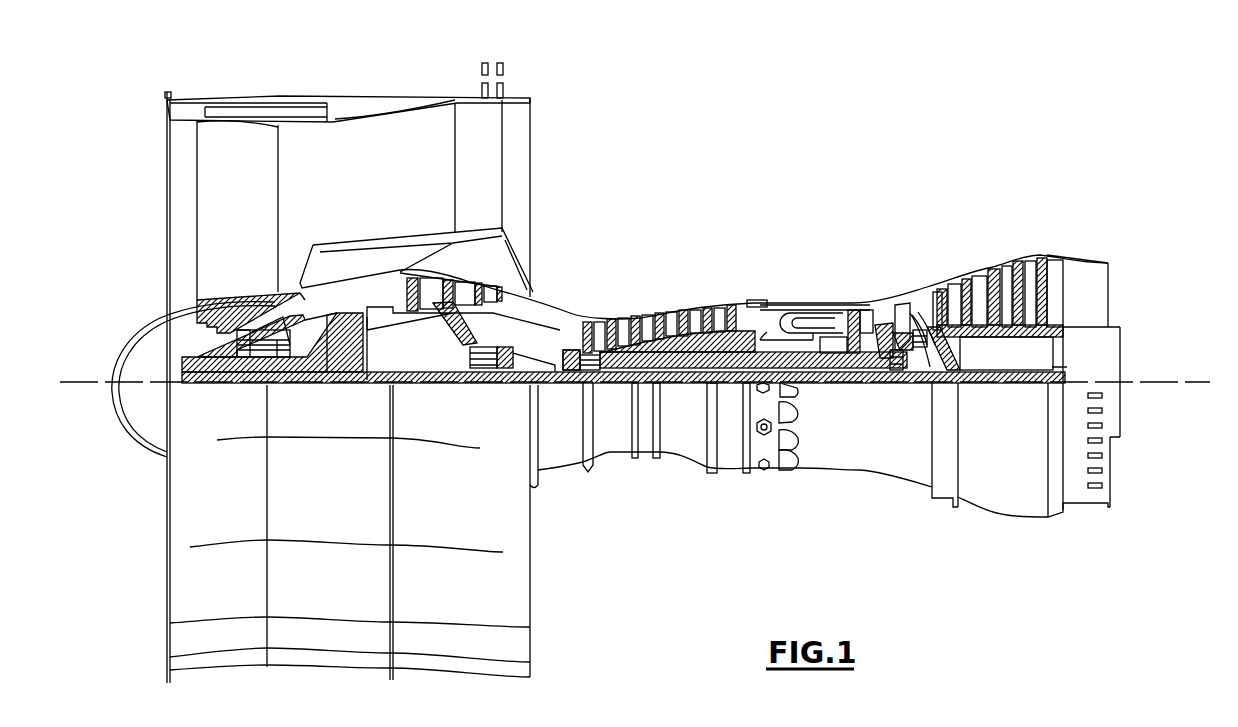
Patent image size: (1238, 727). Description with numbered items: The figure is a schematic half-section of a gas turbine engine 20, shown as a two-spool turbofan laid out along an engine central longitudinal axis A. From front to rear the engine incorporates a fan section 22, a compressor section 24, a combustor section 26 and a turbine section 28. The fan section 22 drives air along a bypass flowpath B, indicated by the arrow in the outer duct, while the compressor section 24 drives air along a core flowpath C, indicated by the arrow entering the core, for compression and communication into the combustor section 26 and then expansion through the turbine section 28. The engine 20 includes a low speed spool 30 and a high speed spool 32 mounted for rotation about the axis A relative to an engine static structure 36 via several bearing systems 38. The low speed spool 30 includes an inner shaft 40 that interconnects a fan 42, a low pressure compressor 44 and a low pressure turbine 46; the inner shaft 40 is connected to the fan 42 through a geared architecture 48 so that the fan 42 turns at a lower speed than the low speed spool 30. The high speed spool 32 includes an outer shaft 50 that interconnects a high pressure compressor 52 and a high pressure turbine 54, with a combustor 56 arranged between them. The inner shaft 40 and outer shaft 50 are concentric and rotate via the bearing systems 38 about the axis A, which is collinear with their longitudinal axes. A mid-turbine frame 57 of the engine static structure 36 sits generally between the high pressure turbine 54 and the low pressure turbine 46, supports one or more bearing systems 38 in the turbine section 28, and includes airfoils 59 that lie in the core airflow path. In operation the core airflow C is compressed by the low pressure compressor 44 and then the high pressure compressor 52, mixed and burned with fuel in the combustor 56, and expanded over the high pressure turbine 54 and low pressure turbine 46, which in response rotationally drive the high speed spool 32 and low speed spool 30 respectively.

The gas turbine engine 20 is at (806, 146).
The fan section 22 is at (280, 95).
The compressor section 24 is at (580, 291).
The combustor section 26 is at (802, 278).
The turbine section 28 is at (948, 242).
The low speed spool 30 is at (687, 388).
The high speed spool 32 is at (735, 345).
The engine static structure 36 is at (727, 473).
The bearing systems 38 is at (258, 346).
The inner shaft 40 is at (550, 385).
The fan 42 is at (252, 227).
The low pressure compressor section 44 is at (466, 285).
The low pressure turbine section 46 is at (997, 270).
The geared architecture 48 is at (353, 365).
The outer shaft 50 is at (812, 383).
The high pressure compressor section 52 is at (656, 335).
The high pressure turbine section 54 is at (870, 303).
The combustor 56 is at (803, 327).
The mid-turbine frame 57 is at (912, 291).
The airfoils 59 is at (912, 318).
The engine central longitudinal axis A is at (1203, 381).
The bypass flowpath B is at (433, 182).
The core flowpath C is at (357, 283).